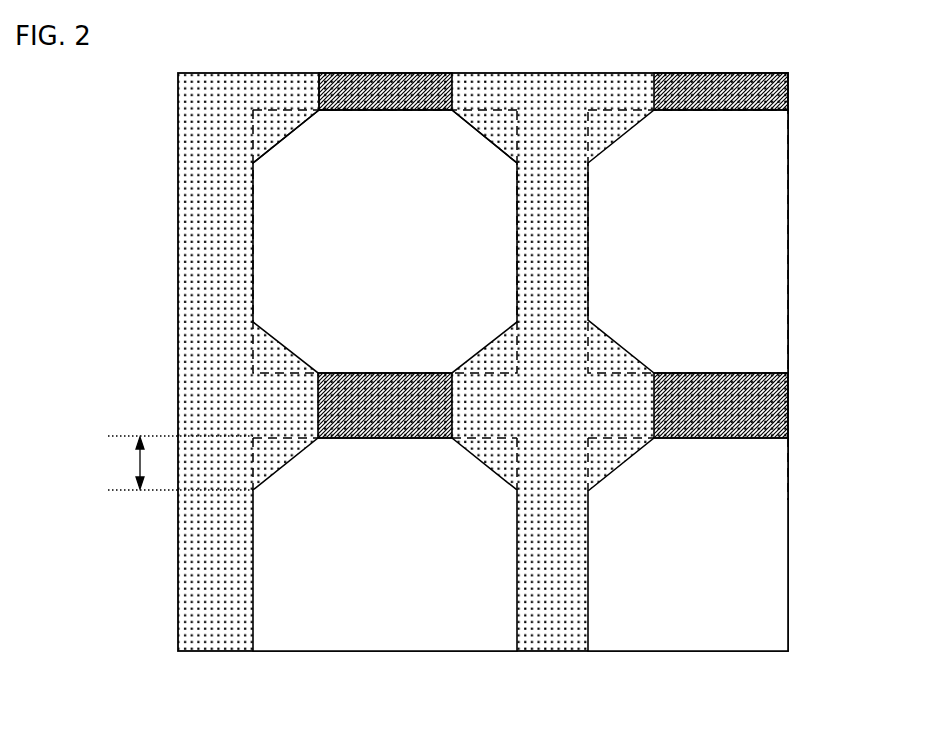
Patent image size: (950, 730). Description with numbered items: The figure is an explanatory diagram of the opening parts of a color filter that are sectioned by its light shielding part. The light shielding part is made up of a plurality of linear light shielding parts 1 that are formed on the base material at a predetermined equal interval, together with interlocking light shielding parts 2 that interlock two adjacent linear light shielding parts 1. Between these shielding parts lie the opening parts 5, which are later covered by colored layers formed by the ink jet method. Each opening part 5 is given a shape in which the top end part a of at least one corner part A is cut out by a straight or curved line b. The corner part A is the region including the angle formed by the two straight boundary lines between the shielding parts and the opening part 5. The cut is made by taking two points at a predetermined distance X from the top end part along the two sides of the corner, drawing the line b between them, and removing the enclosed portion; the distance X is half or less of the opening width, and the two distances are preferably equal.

The linear light shielding part 1 is at (548, 83).
The interlocking light shielding part 2 is at (758, 85).
The opening part 5 is at (762, 323).
The corner part A is at (474, 107).
The top end part a is at (246, 131).
The cutting line b is at (252, 164).
The distance X is at (180, 463).